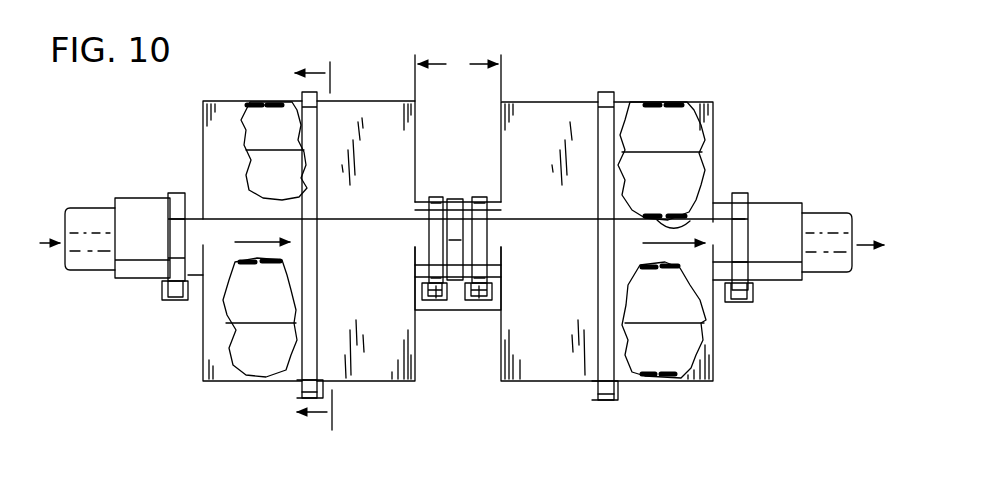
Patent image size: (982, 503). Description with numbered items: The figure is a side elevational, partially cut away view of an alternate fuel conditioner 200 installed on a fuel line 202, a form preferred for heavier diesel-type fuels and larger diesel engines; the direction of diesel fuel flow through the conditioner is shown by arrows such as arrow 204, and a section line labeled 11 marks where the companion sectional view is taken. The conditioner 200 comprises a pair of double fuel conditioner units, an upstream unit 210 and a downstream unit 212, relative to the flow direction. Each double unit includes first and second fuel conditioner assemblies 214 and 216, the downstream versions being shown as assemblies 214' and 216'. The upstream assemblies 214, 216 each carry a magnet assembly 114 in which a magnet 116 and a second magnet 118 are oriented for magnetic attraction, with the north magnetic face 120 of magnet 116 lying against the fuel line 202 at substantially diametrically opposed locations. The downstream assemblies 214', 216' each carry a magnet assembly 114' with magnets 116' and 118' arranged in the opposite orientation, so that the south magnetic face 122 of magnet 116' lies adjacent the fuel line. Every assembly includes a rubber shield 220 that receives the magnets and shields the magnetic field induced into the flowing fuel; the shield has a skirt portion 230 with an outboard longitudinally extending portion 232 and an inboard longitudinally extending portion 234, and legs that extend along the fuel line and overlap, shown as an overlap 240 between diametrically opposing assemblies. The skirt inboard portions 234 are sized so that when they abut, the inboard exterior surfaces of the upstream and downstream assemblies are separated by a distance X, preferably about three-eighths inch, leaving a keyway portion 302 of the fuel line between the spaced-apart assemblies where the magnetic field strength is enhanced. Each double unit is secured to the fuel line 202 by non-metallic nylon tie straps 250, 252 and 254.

The fuel conditioner 200 is at (262, 58).
The upstream unit 210 is at (408, 51).
The downstream unit 212 is at (655, 70).
The first fuel conditioner assembly 214 is at (120, 104).
The first fuel conditioner assembly 214' is at (782, 62).
The second fuel conditioner assembly 216 is at (159, 426).
The second fuel conditioner assembly 216' is at (773, 406).
The section line 11- 11 is at (327, 247).
The magnet assembly 114 is at (246, 249).
The magnet assembly 114' is at (682, 242).
The magnet 116 is at (202, 256).
The magnet 116' is at (725, 233).
The second magnet 118 is at (202, 251).
The second magnet 118' is at (729, 237).
The north magnetic face 120 is at (240, 313).
The south magnetic face 122 is at (687, 212).
The fuel line 202 is at (83, 225).
The arrow 204 is at (40, 243).
The rubber shield 220 is at (386, 118).
The skirt portion 230 is at (778, 202).
The outboard longitudinally extending portion 232 is at (138, 228).
The inboard longitudinally extending portion 234 is at (462, 205).
The overlap 240 is at (501, 118).
The nylon tie strap 250 is at (165, 265).
The nylon tie strap 252 is at (310, 348).
The nylon tie strap 254 is at (479, 205).
The keyway portion 302 is at (470, 305).
The distance X is at (455, 65).